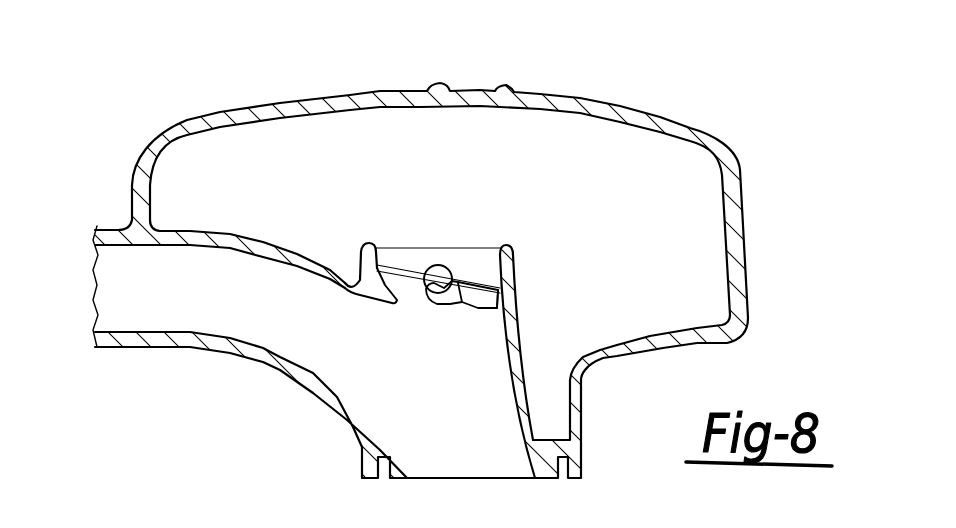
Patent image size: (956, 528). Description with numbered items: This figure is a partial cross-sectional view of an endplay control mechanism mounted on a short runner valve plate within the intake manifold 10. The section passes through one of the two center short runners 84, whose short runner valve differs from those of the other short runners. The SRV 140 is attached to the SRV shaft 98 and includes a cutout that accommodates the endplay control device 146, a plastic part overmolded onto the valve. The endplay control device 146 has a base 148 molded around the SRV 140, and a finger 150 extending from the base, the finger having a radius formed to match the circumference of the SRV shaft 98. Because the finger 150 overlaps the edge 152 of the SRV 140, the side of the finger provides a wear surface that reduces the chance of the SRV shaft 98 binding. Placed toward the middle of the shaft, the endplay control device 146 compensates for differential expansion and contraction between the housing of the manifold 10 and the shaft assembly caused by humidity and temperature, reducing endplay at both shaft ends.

The intake manifold 10 is at (201, 90).
The short runner 84 is at (500, 244).
The SRV shaft 98 is at (434, 266).
The SRV 140 is at (391, 274).
The endplay control device 146 is at (426, 309).
The base 148 is at (481, 287).
The finger 150 is at (463, 305).
The edge 152 is at (397, 298).